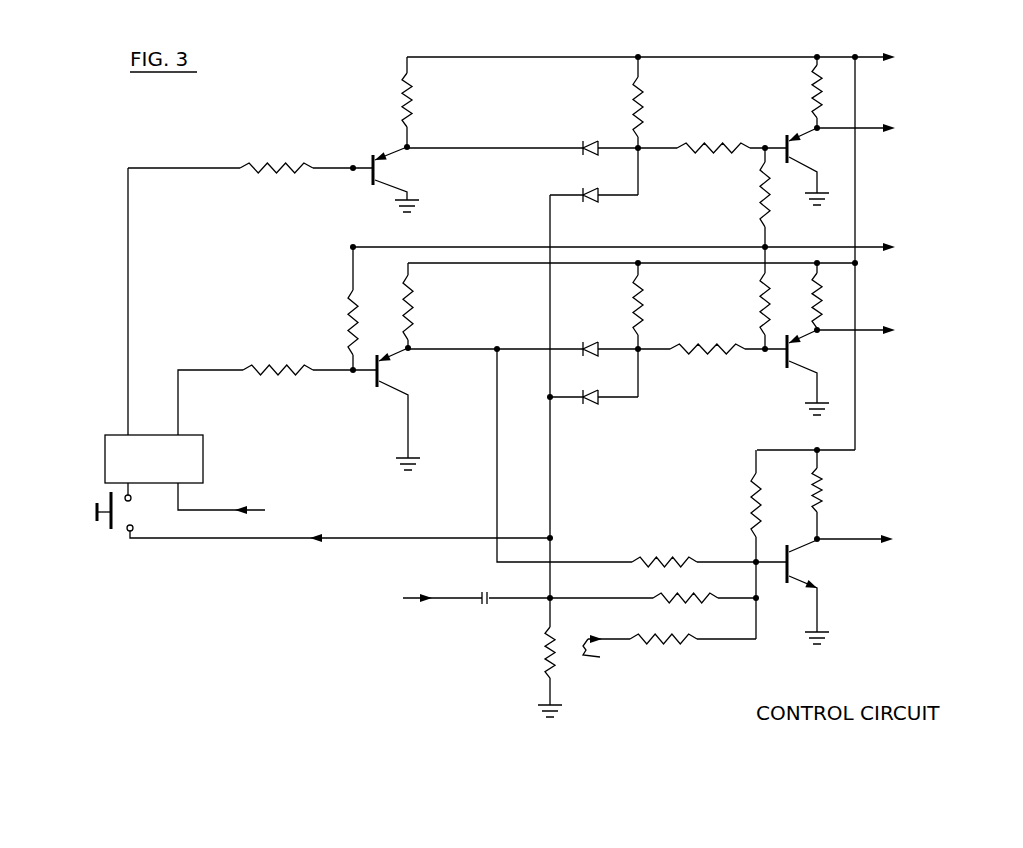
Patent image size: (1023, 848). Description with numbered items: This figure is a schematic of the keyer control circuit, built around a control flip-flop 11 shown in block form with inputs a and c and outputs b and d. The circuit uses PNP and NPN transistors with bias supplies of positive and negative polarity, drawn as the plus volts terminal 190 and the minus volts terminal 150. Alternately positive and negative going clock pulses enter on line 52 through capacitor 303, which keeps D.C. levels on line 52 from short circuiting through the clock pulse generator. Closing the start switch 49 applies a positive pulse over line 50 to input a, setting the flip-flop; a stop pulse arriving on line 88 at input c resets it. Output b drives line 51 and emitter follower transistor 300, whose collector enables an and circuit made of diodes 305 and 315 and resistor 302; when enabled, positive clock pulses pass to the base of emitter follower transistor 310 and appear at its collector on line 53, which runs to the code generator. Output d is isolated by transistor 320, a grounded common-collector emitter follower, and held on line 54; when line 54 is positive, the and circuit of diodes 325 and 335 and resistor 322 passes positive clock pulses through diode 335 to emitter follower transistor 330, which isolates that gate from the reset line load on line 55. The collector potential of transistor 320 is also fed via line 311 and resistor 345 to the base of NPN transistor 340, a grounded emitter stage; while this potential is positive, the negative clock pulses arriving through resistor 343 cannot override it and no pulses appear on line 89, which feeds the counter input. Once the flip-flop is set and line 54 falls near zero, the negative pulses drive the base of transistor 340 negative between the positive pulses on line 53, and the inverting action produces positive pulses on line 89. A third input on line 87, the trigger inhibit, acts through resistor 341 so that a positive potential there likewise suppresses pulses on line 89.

The positive voltage supply terminal 190 is at (866, 57).
The negative voltage supply terminal 150 is at (866, 247).
The line 53 is at (868, 128).
The reset line 55 is at (865, 330).
The line 89 is at (838, 539).
The line 51 is at (128, 305).
The line 54 is at (183, 370).
The line 52 is at (552, 508).
The emitter follower transistor 300 is at (450, 180).
The resistor 302 is at (645, 100).
The diode 305 is at (586, 141).
The diode 315 is at (600, 203).
The emitter follower transistor 310 is at (843, 160).
The transistor 320 is at (440, 384).
The resistor 322 is at (645, 309).
The diode 325 is at (588, 342).
The diode 335 is at (596, 405).
The transistor 330 is at (845, 362).
The NPN transistor 340 is at (860, 575).
The resistor 345 is at (645, 553).
The resistor 343 is at (668, 592).
The resistor 341 is at (668, 620).
The line 87 is at (598, 636).
The line 88 is at (180, 502).
The line 50 is at (133, 494).
The switch 49 is at (108, 527).
The control flip-flop 11 is at (105, 459).
The line 311 is at (497, 502).
The capacitor 303 is at (480, 606).